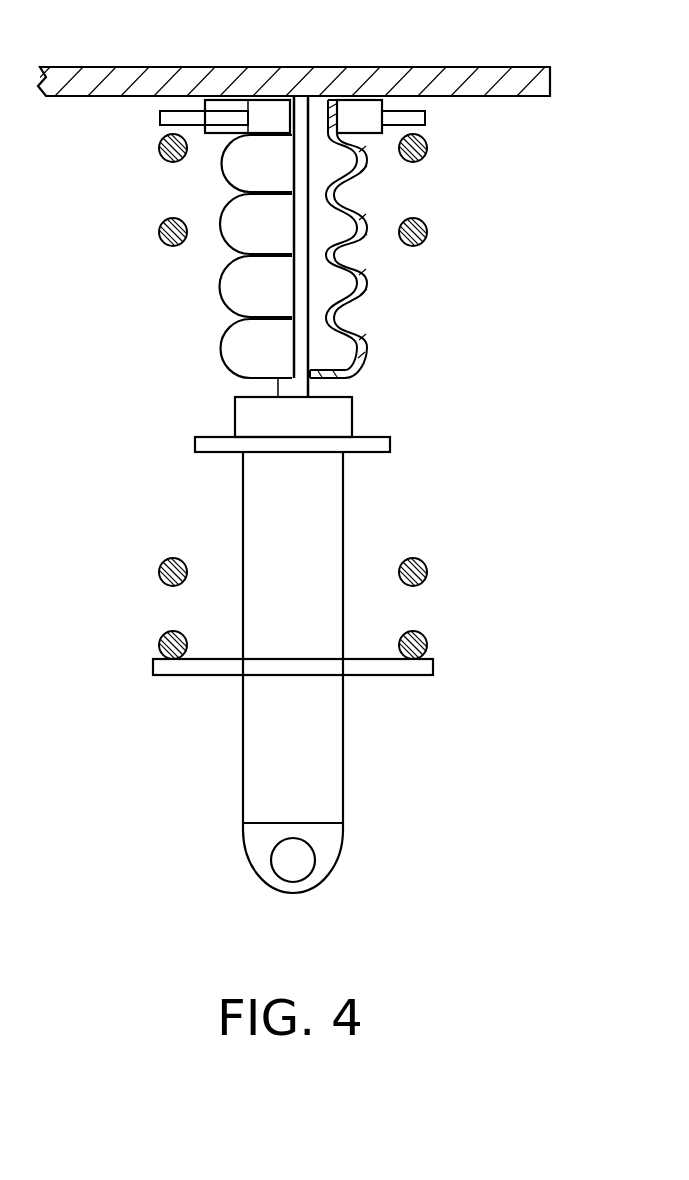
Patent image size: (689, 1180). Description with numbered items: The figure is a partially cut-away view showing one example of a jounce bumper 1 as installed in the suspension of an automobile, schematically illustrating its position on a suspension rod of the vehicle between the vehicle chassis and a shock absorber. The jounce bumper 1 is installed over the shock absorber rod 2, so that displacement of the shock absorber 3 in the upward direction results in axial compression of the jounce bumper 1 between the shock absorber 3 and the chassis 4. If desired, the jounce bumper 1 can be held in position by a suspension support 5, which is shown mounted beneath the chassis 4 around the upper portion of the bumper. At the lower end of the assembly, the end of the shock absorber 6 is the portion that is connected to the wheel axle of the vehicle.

The jounce bumper 1 is at (220, 290).
The shock absorber rod 2 is at (310, 388).
The shock absorber 3 is at (243, 790).
The chassis 4 is at (117, 67).
The suspension support 5 is at (165, 116).
The end of the shock absorber 6 is at (298, 863).